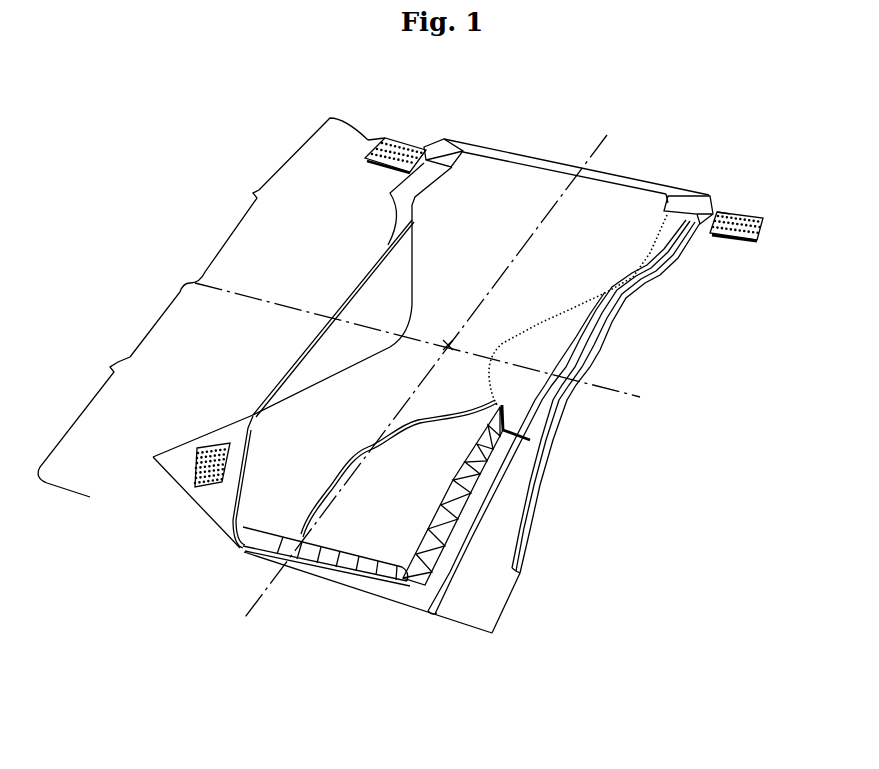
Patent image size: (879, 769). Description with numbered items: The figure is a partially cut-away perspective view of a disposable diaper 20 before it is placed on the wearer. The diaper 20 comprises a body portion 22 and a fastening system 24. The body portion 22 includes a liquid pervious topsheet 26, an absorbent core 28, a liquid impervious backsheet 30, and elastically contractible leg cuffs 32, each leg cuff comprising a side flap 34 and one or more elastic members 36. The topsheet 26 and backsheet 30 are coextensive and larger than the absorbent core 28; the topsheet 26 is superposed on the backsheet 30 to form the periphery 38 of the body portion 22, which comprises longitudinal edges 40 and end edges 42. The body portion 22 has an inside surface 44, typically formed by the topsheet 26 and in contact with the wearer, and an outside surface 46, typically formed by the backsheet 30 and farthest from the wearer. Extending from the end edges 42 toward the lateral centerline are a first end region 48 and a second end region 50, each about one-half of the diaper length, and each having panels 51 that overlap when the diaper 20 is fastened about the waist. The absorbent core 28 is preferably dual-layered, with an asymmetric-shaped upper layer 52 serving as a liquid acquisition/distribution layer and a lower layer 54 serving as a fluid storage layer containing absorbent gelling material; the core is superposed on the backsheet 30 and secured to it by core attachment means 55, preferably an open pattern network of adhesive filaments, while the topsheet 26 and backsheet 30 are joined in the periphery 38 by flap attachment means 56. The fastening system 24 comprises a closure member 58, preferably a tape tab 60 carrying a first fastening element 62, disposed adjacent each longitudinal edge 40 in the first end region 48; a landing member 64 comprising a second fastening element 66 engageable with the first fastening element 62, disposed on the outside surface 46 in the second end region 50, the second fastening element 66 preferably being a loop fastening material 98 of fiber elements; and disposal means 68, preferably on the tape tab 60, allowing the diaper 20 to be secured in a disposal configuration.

The diaper 20 is at (547, 137).
The body portion 22 is at (280, 357).
The fastening system 24 is at (685, 178).
The topsheet 26 is at (375, 297).
The absorbent core 28 is at (407, 577).
The backsheet 30 is at (487, 605).
The leg cuffs 32 is at (563, 403).
The side flap 34 is at (573, 327).
The elastic members 36 is at (517, 462).
The periphery 38 is at (518, 498).
The longitudinal edges 40 is at (385, 240).
The end edges 42 is at (493, 148).
The inside surface 44 is at (269, 482).
The outside surface 46 is at (530, 440).
The first end region 48 is at (249, 237).
The second end region 50 is at (84, 426).
The panels 51 is at (500, 563).
The upper layer 52 is at (399, 468).
The lower layer 54 is at (383, 580).
The core attachment means 55 is at (327, 565).
The flap attachment means 56 is at (460, 592).
The closure member 58 is at (397, 128).
The tape tab 60 is at (440, 147).
The first fastening element 62 is at (373, 140).
The landing member 64 is at (207, 483).
The second fastening element 66 is at (200, 463).
The disposal means 68 is at (373, 165).
The loop fastening material 98 is at (205, 445).